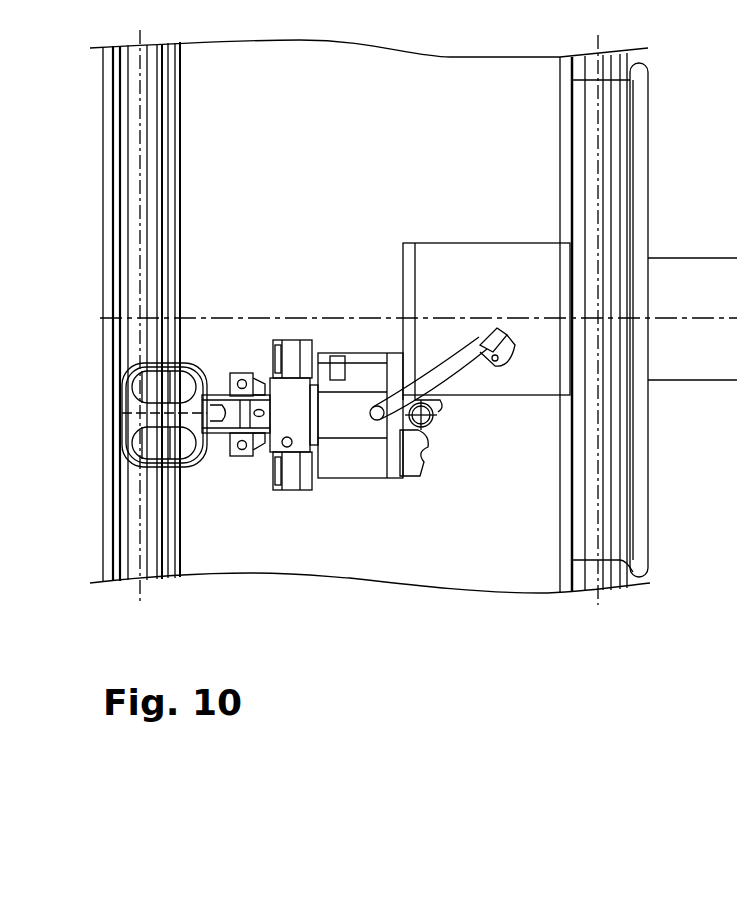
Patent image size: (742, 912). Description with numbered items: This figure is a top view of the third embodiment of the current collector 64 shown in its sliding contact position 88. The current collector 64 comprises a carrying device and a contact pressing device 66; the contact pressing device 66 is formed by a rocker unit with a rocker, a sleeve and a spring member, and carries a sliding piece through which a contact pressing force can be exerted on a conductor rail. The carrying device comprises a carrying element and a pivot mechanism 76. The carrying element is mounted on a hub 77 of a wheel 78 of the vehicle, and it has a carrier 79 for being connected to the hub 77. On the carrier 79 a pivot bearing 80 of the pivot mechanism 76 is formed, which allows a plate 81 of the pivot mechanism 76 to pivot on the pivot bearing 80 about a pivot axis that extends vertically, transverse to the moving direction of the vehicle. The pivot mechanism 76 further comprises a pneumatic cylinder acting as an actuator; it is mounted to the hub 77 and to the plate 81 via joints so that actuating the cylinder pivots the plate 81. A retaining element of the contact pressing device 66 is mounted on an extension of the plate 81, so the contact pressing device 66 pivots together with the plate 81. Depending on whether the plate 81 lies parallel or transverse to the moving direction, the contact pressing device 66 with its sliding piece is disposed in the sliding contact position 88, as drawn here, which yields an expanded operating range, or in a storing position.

The current collector 64 is at (322, 235).
The contact pressing device 66 is at (262, 312).
The pivot mechanism 76 is at (445, 455).
The hub 77 is at (497, 258).
The wheel 78 is at (634, 142).
The carrier 79 is at (408, 248).
The pivot bearing 80 is at (434, 422).
The plate 81 is at (397, 480).
The sliding contact position 88 is at (235, 348).